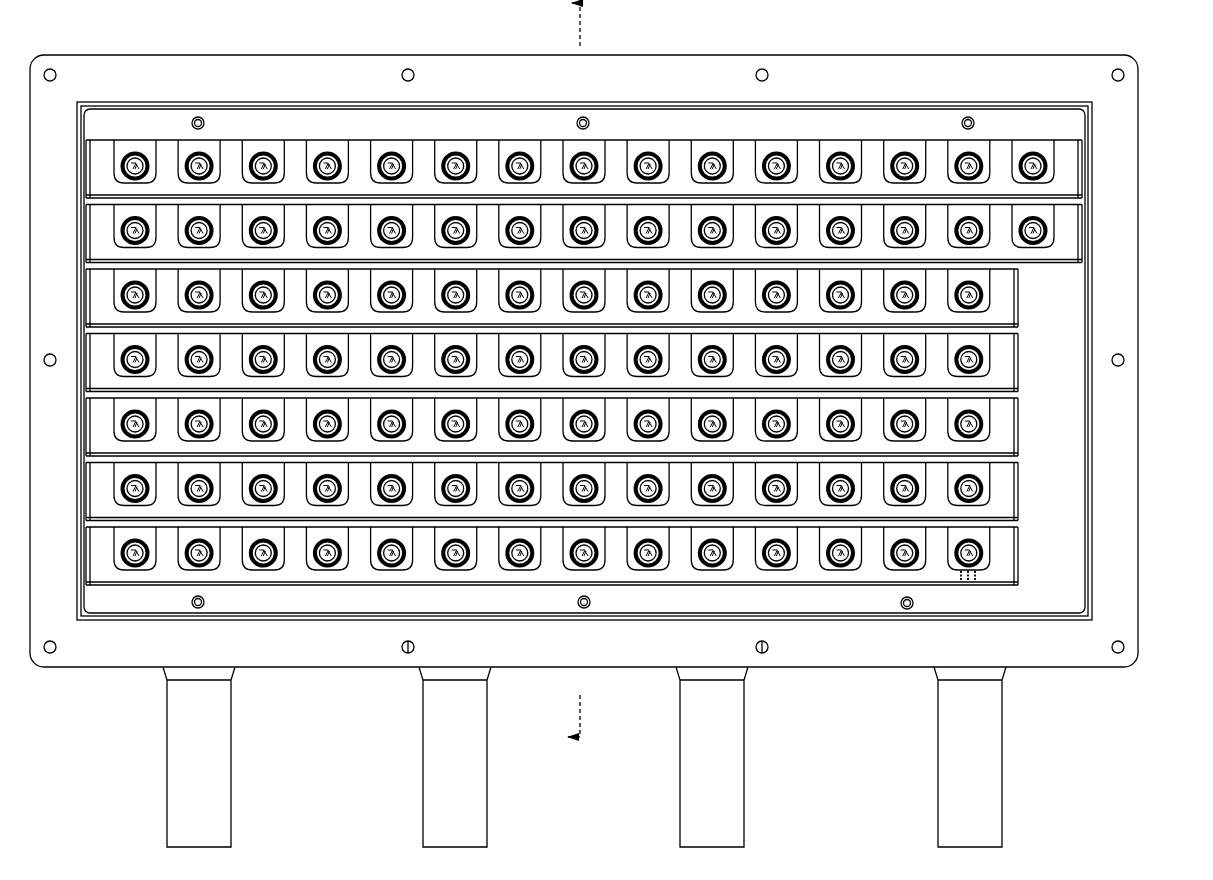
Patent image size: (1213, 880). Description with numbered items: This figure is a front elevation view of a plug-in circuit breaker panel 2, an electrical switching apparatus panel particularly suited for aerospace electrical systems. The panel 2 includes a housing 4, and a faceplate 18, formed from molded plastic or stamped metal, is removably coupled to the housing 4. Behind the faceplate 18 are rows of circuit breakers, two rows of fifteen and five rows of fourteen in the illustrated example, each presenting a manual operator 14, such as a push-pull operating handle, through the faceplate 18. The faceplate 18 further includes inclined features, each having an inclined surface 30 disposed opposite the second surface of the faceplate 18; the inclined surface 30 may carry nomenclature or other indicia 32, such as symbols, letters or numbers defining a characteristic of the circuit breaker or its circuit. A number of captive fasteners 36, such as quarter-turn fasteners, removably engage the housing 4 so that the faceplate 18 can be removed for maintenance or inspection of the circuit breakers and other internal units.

The plug-in circuit breaker panel 2 is at (1054, 46).
The housing 4 is at (1124, 108).
The faceplate 18 is at (601, 361).
The manual operator 14 is at (985, 548).
The inclined surface 30 is at (1016, 562).
The indicia 32 is at (970, 581).
The captive fasteners 36 is at (192, 123).